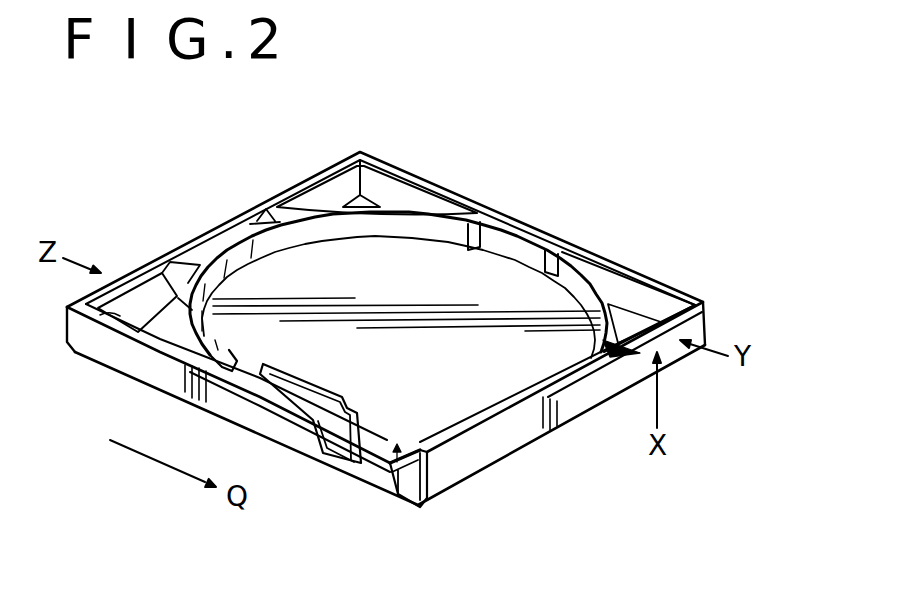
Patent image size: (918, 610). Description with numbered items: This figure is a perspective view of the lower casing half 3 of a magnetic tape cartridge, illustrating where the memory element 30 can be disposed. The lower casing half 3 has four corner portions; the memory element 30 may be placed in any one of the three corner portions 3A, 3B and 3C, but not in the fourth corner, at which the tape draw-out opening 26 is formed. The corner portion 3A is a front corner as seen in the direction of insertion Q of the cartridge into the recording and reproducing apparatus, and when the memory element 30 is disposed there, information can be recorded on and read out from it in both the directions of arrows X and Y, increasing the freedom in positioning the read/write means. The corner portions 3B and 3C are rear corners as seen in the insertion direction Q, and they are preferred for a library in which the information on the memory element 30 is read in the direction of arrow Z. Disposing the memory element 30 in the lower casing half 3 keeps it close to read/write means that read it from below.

The lower casing half 3 is at (142, 363).
The corner portion 3A is at (690, 281).
The corner portion 3B is at (130, 250).
The corner portion 3C is at (358, 147).
The tape draw-out opening 26 is at (398, 490).
The memory element 30 is at (100, 315).